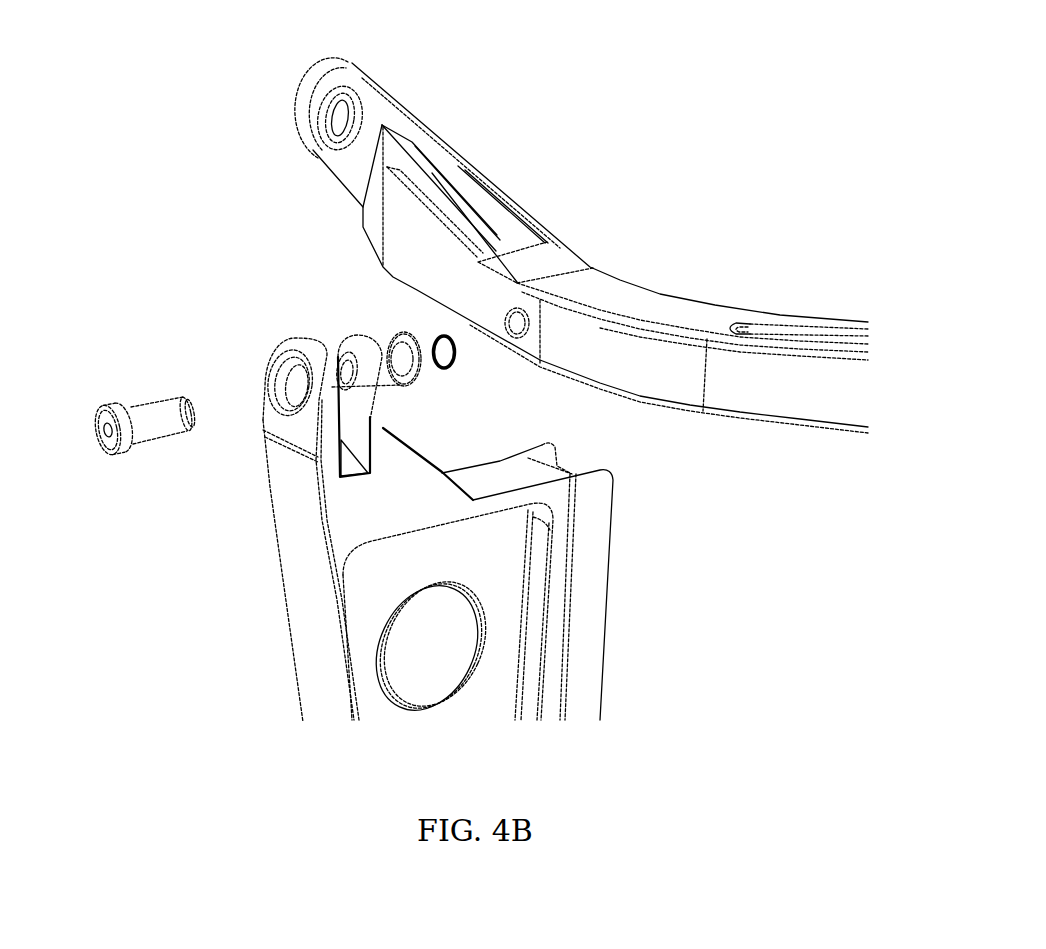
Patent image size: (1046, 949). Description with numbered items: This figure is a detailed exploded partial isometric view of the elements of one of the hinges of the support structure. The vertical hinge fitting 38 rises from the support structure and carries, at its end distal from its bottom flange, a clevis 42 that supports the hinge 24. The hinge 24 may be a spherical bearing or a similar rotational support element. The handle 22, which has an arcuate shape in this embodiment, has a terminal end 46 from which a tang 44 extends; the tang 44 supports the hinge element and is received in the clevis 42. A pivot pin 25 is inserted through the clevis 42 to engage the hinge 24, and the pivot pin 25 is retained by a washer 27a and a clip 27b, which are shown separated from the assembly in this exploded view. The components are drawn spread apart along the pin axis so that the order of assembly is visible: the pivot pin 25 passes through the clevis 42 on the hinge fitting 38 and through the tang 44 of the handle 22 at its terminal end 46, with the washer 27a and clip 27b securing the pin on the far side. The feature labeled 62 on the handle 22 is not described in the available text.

The handle 22 is at (750, 402).
The hinge 24 is at (340, 143).
The pivot pin 25 is at (152, 403).
The washer 27a is at (392, 342).
The clip 27b is at (442, 332).
The vertical hinge fitting 38 is at (302, 600).
The clevis 42 is at (302, 348).
The tang 44 is at (370, 110).
The terminal end 46 is at (450, 207).
The hole 62 is at (520, 330).